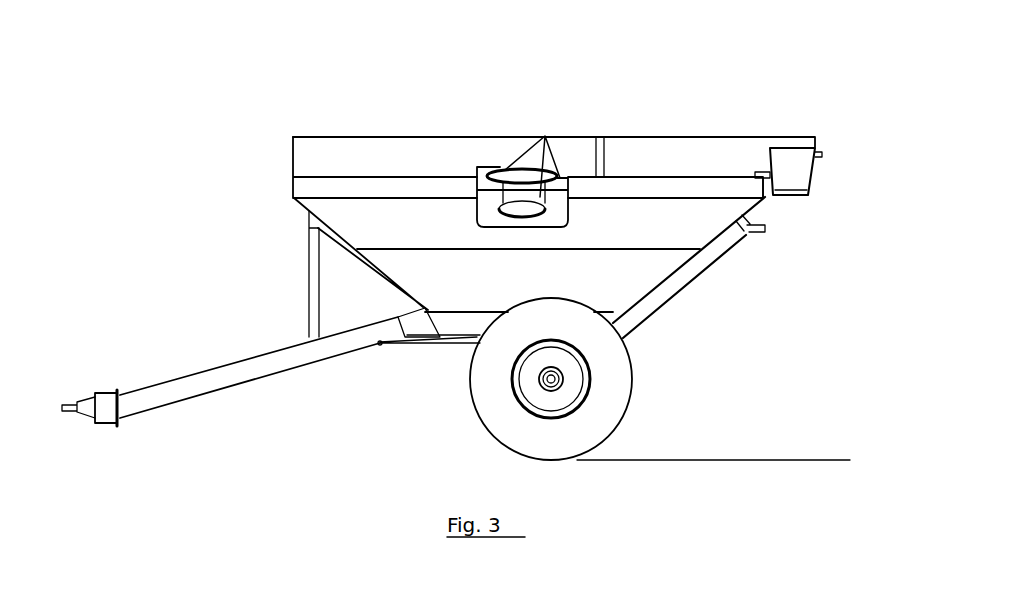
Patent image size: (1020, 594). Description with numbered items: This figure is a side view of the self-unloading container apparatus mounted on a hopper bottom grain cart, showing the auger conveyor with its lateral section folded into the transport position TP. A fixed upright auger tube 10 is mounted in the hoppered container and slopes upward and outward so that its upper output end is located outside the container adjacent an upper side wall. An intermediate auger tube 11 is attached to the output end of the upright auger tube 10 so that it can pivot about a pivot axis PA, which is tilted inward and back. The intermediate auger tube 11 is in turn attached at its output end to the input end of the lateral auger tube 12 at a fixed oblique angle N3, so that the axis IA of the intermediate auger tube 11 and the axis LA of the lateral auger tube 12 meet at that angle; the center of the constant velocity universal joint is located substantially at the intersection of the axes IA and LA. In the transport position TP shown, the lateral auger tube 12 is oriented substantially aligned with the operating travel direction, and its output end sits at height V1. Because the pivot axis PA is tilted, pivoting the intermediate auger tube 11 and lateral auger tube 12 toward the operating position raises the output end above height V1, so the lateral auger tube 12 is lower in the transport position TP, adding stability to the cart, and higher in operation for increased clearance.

The upright auger tube 10 is at (530, 202).
The intermediate auger tube 11 is at (536, 153).
The lateral auger tube 12 is at (701, 143).
The transport position TP is at (815, 172).
The height V1 is at (837, 459).
The pivot axis PA is at (503, 300).
The axis of the intermediate auger tube IA is at (540, 168).
The axis of the lateral auger tube LA is at (557, 156).
The oblique angle N3 is at (630, 93).